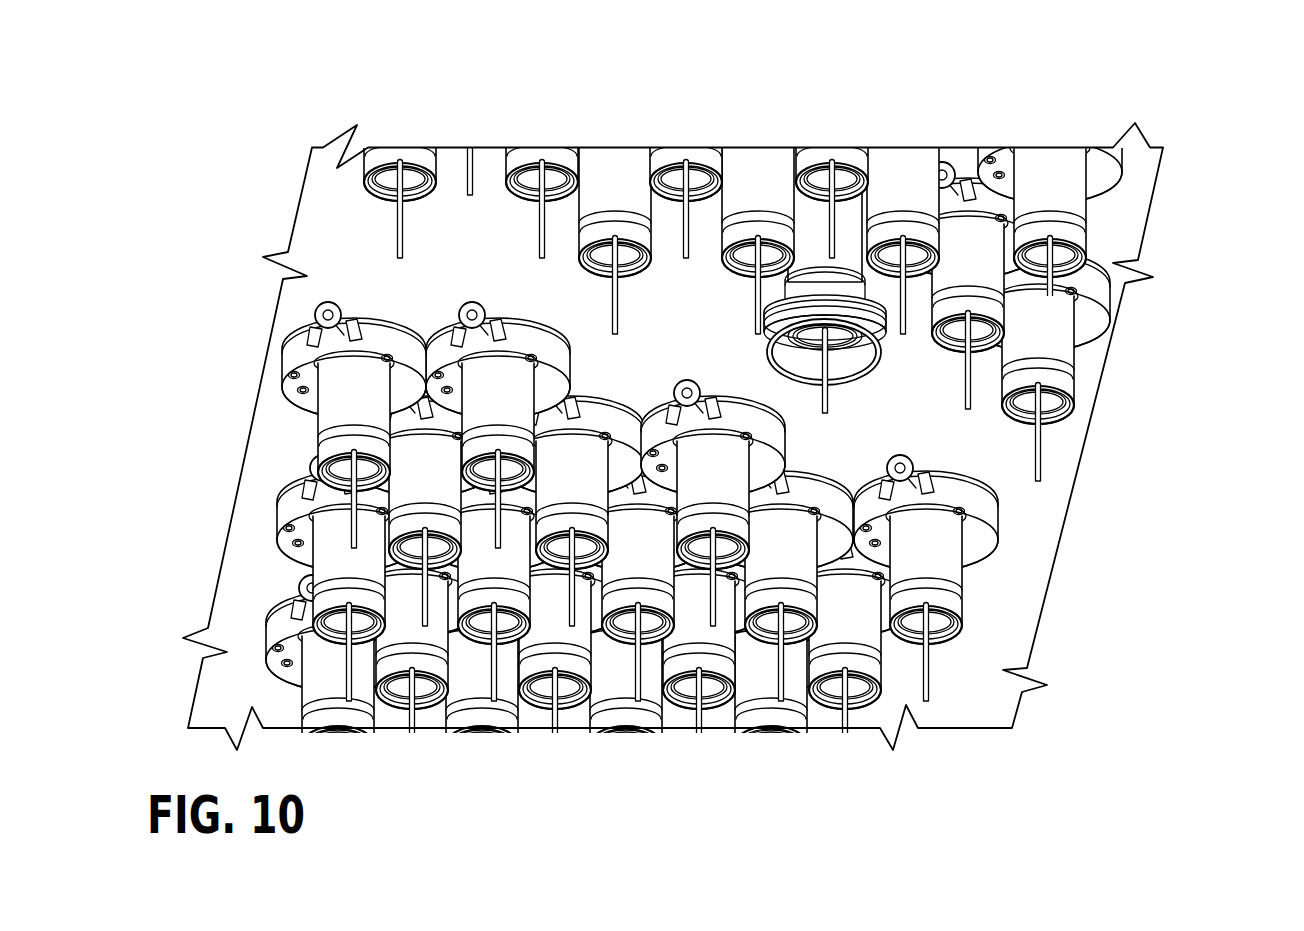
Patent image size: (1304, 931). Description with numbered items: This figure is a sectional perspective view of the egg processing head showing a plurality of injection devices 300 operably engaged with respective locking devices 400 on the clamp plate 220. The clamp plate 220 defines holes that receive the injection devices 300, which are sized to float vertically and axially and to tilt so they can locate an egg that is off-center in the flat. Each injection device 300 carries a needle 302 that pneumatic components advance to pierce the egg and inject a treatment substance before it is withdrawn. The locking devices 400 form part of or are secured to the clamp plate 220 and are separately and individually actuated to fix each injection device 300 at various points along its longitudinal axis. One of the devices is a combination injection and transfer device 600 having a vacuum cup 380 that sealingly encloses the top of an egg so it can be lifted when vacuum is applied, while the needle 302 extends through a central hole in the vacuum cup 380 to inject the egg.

The clamp plate 220 is at (1007, 608).
The injection device 300 is at (337, 567).
The needle 302 is at (398, 233).
The vacuum cup 380 is at (840, 365).
The locking device 400 is at (298, 394).
The combination injection and transfer device 600 is at (845, 231).